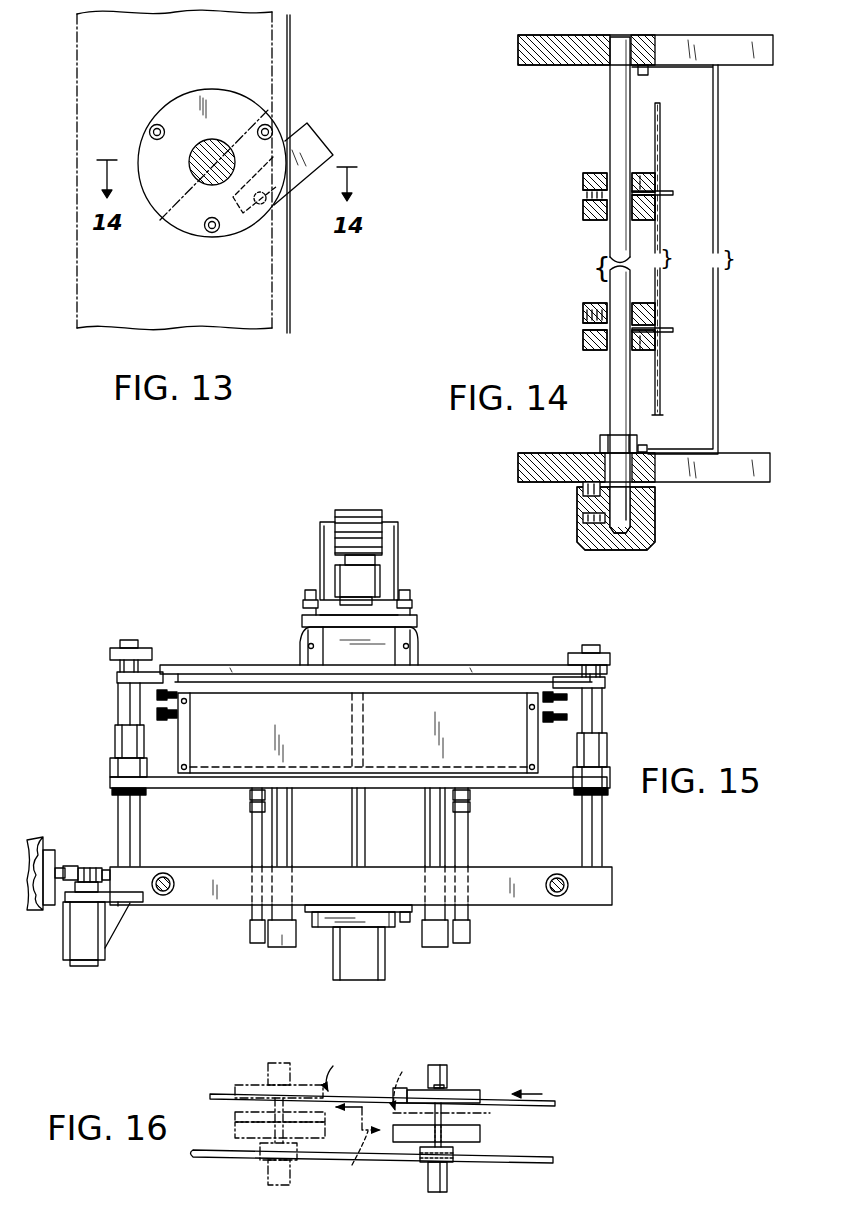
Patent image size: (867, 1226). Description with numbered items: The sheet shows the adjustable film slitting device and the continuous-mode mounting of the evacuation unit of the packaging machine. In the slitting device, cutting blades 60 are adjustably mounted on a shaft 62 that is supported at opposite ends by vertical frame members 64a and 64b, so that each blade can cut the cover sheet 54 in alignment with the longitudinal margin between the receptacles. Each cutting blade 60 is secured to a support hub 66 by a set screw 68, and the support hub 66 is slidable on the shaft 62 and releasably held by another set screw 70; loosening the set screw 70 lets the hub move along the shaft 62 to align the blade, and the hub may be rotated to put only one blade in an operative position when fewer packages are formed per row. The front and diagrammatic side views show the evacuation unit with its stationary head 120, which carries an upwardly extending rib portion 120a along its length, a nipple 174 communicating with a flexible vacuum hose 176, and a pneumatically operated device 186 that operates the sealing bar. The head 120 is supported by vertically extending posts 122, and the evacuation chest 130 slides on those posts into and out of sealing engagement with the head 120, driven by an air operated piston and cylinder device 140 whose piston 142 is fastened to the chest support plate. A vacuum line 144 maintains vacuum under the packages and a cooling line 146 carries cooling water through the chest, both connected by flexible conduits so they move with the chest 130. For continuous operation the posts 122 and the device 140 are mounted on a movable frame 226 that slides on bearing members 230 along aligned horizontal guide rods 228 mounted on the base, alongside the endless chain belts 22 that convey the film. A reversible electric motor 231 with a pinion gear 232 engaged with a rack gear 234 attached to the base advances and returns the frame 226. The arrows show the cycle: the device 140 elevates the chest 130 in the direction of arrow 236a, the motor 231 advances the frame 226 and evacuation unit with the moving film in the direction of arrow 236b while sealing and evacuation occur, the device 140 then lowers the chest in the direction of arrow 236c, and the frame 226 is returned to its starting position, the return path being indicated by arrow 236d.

In FIG. 15, the endless chain belts 22 is at (569, 717).
In FIG. 13, the cover sheet 54 is at (291, 73).
In FIG. 14, the cover sheet 54 is at (661, 120).
In FIG. 13, the cutting blades 60 is at (312, 140).
In FIG. 14, the cutting blades 60 is at (666, 191).
In FIG. 13, the shaft 62 is at (198, 181).
In FIG. 14, the shaft 62 is at (609, 246).
In FIG. 13, the vertical frame member 64a is at (106, 326).
In FIG. 14, the vertical frame member 64a is at (654, 37).
In FIG. 14, the vertical frame member 64b is at (672, 483).
In FIG. 13, the support hub 66 is at (198, 89).
In FIG. 14, the support hub 66 is at (589, 172).
In FIG. 14, the set screw 68 is at (640, 183).
In FIG. 14, the set screw 70 is at (586, 207).
In FIG. 15, the stationary head 120 is at (511, 666).
In FIG. 16, the stationary head 120 is at (235, 1088).
In FIG. 15, the rib portion 120a is at (382, 656).
In FIG. 15, the vertically extending posts 122 is at (118, 700).
In FIG. 15, the evacuation chest 130 is at (158, 738).
In FIG. 16, the evacuation chest 130 is at (235, 1121).
In FIG. 15, the air operated piston and cylinder device 140 is at (379, 965).
In FIG. 16, the air operated piston and cylinder device 140 is at (268, 1175).
In FIG. 15, the piston 142 is at (366, 838).
In FIG. 15, the vacuum line 144 is at (293, 832).
In FIG. 15, the cooling inlet line 146 is at (252, 823).
In FIG. 15, the nipple 174 is at (376, 584).
In FIG. 15, the vacuum hose 176 is at (383, 513).
In FIG. 15, the pneumatically operated device 186 is at (399, 551).
In FIG. 16, the pneumatically operated device 186 is at (268, 1069).
In FIG. 15, the movable frame 226 is at (613, 897).
In FIG. 16, the movable frame 226 is at (454, 1158).
In FIG. 15, the horizontal guide rods 228 is at (163, 896).
In FIG. 16, the horizontal guide rods 228 is at (536, 1151).
In FIG. 15, the bearing members 230 is at (171, 875).
In FIG. 15, the reversible motor 231 is at (96, 950).
In FIG. 15, the pinion gear 232 is at (94, 866).
In FIG. 15, the rack gear 234 is at (62, 862).
In FIG. 16, the arrow 236a is at (411, 1082).
In FIG. 16, the arrow 236b is at (362, 1105).
In FIG. 16, the arrow 236c is at (325, 1069).
In FIG. 16, the motion arrow 236d is at (369, 1158).